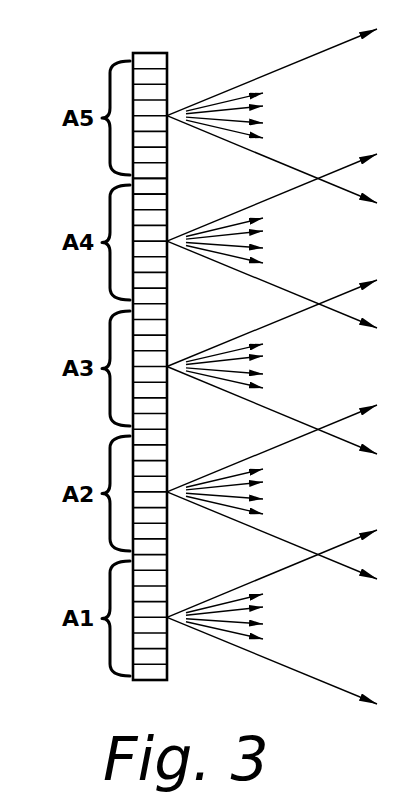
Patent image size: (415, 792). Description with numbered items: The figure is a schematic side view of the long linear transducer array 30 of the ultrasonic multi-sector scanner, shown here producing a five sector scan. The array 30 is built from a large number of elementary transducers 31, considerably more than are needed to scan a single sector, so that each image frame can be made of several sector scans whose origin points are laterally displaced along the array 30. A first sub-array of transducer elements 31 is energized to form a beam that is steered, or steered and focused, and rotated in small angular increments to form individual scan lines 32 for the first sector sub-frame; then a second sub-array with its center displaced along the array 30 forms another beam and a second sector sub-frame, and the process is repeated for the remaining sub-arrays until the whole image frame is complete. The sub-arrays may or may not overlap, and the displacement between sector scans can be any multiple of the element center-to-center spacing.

The linear transducer array 30 is at (176, 86).
The elementary transducer 31 is at (159, 191).
The scan line 32 is at (228, 647).